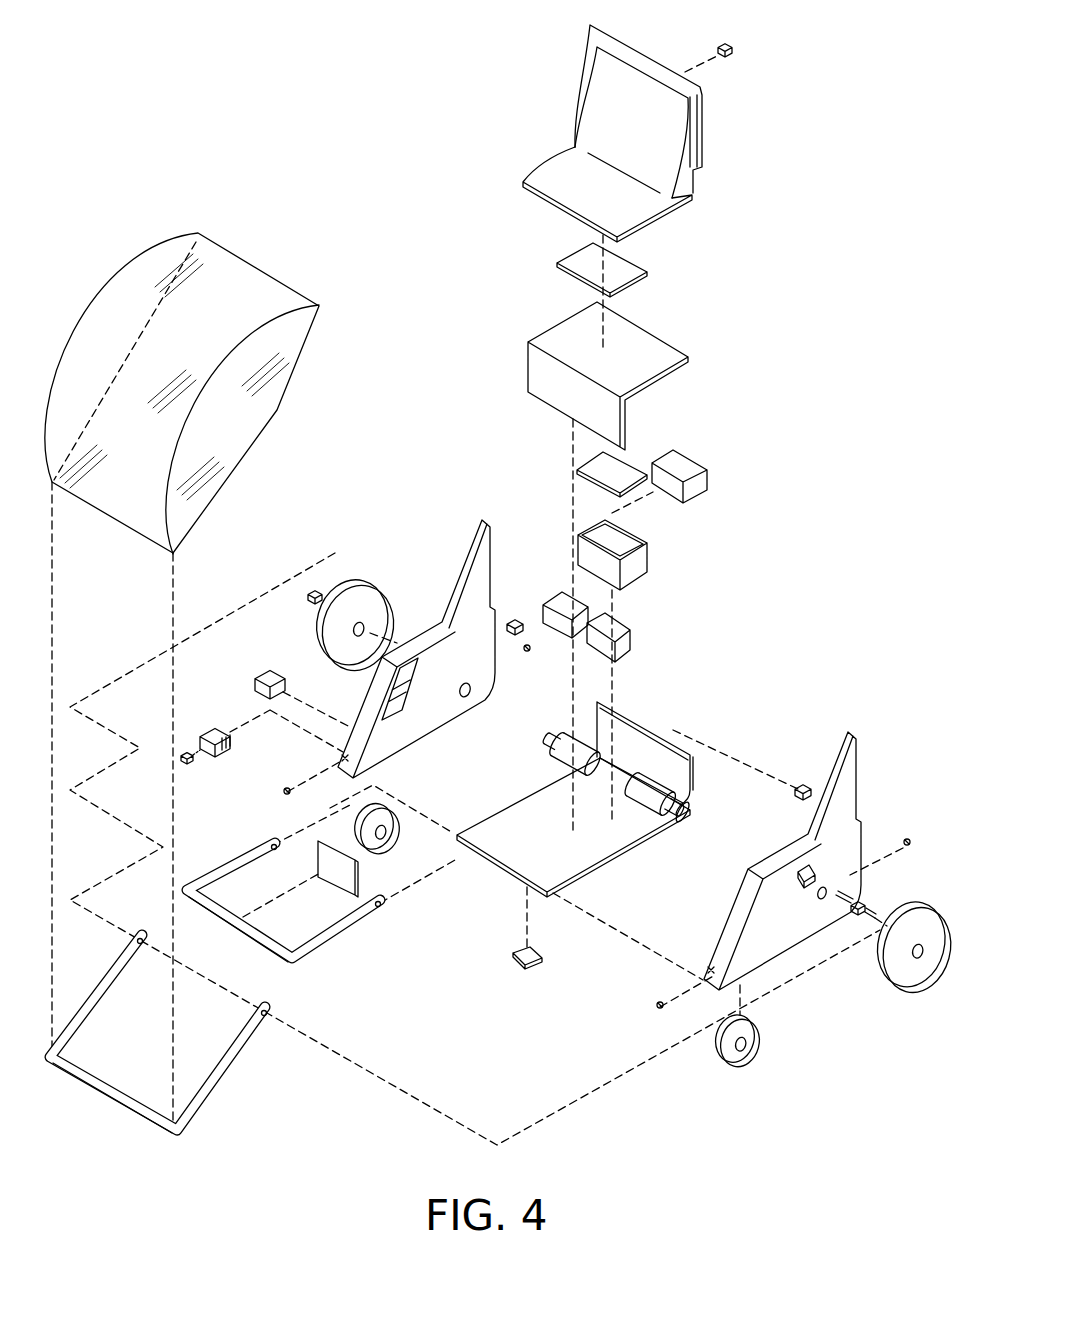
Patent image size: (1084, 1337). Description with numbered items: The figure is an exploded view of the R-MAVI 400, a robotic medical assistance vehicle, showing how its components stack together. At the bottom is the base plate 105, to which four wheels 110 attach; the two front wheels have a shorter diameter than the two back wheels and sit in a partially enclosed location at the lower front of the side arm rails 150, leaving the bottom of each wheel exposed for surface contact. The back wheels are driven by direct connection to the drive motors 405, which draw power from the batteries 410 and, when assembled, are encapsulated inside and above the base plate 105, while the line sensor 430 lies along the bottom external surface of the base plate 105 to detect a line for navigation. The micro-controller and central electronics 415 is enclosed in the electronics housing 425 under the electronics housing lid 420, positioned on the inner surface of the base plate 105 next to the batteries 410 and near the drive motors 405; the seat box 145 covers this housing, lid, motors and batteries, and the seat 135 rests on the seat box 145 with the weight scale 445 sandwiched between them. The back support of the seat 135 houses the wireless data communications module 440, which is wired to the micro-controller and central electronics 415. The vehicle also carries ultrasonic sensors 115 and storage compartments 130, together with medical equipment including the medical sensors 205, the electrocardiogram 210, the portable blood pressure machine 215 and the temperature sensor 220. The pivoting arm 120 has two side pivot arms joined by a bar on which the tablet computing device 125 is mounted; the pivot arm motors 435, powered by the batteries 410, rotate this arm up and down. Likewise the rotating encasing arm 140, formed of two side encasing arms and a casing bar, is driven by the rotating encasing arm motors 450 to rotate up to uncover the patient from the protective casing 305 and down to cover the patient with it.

The R-MAVI 400 is at (172, 100).
The base plate 105 is at (505, 868).
The wheels 110 is at (368, 590).
The ultrasonic sensors 115 is at (527, 651).
The pivoting arm 120 is at (333, 938).
The tablet computing device 125 is at (335, 885).
The storage compartments 130 is at (413, 677).
The seat 135 is at (552, 157).
The rotating encasing arm 140 is at (223, 1082).
The seat box 145 is at (525, 367).
The side arm rails 150 is at (478, 524).
The medical sensors 205 is at (260, 667).
The electrocardiogram 210 is at (203, 727).
The portable blood pressure machine 215 is at (237, 748).
The temperature sensor 220 is at (190, 765).
The protective casing 305 is at (147, 256).
The drive motors 405 is at (557, 752).
The batteries 410 is at (565, 592).
The micro-controller and central electronics 415 is at (693, 458).
The electronics housing lid 420 is at (627, 462).
The electronics housing 425 is at (653, 563).
The line sensor 430 is at (536, 960).
The pivot arm motors 435 is at (513, 618).
The wireless data communications module 440 is at (732, 56).
The weight scale 445 is at (577, 250).
The rotating encasing arm motors 450 is at (316, 590).